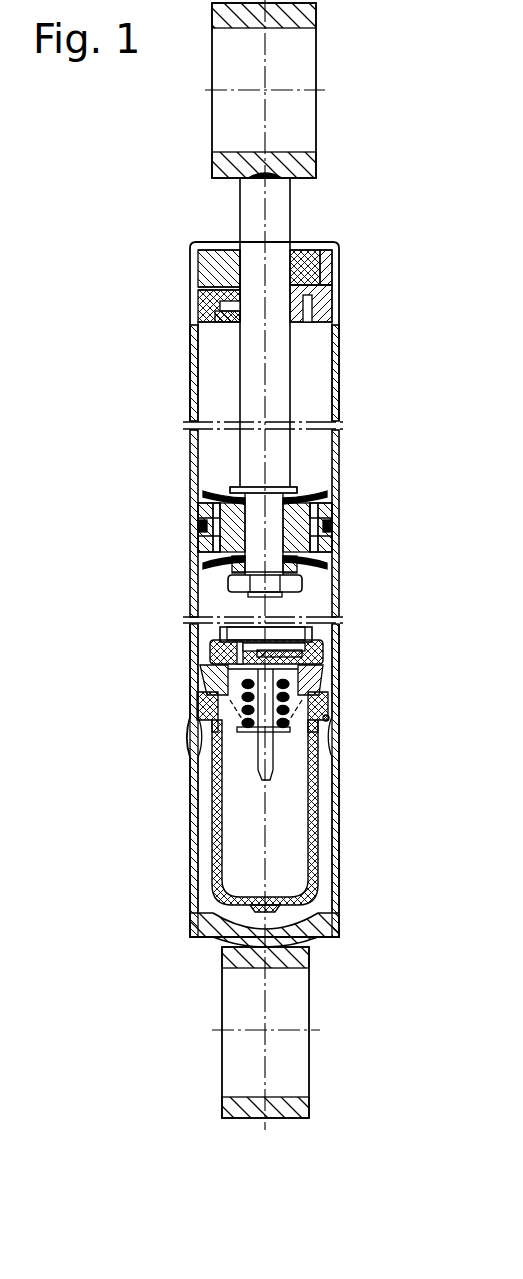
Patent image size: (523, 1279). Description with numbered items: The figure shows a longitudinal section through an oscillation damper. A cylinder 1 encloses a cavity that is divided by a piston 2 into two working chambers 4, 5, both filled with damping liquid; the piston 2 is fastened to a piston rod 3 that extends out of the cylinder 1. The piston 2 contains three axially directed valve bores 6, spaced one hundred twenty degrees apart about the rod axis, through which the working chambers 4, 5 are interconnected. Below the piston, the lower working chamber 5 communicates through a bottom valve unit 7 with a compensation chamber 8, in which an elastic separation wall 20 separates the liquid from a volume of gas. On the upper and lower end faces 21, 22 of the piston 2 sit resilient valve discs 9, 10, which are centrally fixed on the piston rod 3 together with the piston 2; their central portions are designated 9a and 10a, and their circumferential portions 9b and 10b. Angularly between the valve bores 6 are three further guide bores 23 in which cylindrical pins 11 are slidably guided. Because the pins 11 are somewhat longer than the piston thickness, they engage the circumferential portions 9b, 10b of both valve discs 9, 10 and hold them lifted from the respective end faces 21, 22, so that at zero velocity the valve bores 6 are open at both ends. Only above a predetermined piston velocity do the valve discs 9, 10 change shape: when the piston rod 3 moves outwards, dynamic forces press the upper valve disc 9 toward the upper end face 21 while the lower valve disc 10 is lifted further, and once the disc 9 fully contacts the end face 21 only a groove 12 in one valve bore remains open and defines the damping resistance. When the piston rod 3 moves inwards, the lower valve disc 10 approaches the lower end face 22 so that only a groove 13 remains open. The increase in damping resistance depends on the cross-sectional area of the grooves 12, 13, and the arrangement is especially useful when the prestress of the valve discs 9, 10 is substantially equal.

The cylinder 1 is at (189, 367).
The piston 2 is at (305, 540).
The piston rod 3 is at (288, 213).
The working chamber 4 is at (318, 400).
The working chamber 5 is at (323, 602).
The valve bores 6 is at (198, 543).
The bottom valve unit 7 is at (215, 680).
The compensation chamber 8 is at (200, 835).
The valve disc 9 is at (225, 489).
The central portion of valve disc 9a is at (235, 487).
The circumferential portion of valve disc 9b is at (312, 490).
The valve disc 10 is at (215, 582).
The central portion of valve disc 10a is at (232, 578).
The circumferential portion of valve disc 10b is at (322, 592).
The cylindrical pins 11 is at (328, 512).
The groove 12 is at (205, 518).
The groove 13 is at (205, 560).
The elastic separation wall 20 is at (318, 788).
The end face 21 is at (325, 497).
The end face 22 is at (328, 558).
The guide bores 23 is at (330, 527).